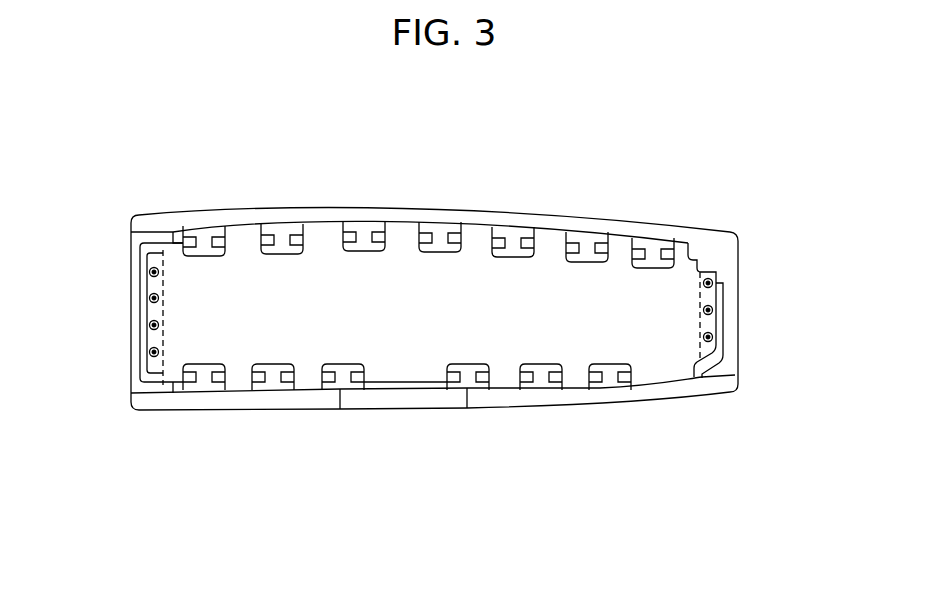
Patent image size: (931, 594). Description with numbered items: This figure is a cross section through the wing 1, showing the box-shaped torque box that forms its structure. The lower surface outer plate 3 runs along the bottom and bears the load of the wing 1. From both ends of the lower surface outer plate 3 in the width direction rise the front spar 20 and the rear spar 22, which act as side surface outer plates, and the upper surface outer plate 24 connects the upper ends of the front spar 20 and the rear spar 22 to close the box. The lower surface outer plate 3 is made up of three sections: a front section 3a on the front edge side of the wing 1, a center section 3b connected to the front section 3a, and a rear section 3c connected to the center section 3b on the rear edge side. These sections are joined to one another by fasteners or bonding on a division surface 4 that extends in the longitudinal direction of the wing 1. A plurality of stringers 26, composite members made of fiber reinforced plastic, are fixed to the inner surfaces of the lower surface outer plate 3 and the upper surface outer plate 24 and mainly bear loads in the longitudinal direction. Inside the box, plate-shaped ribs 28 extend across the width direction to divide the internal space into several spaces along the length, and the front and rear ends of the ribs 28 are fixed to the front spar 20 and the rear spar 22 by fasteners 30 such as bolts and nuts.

The wing 1 is at (614, 138).
The lower surface outer plate 3 is at (433, 465).
The front section 3a is at (197, 411).
The center section 3b is at (404, 409).
The rear section 3c is at (566, 406).
The division surface 4 is at (341, 409).
The front spar 20 is at (131, 283).
The rear spar 22 is at (738, 259).
The upper surface outer plate 24 is at (361, 208).
The stringers 26 is at (284, 254).
The ribs 28 is at (382, 317).
The fasteners 30 is at (160, 325).